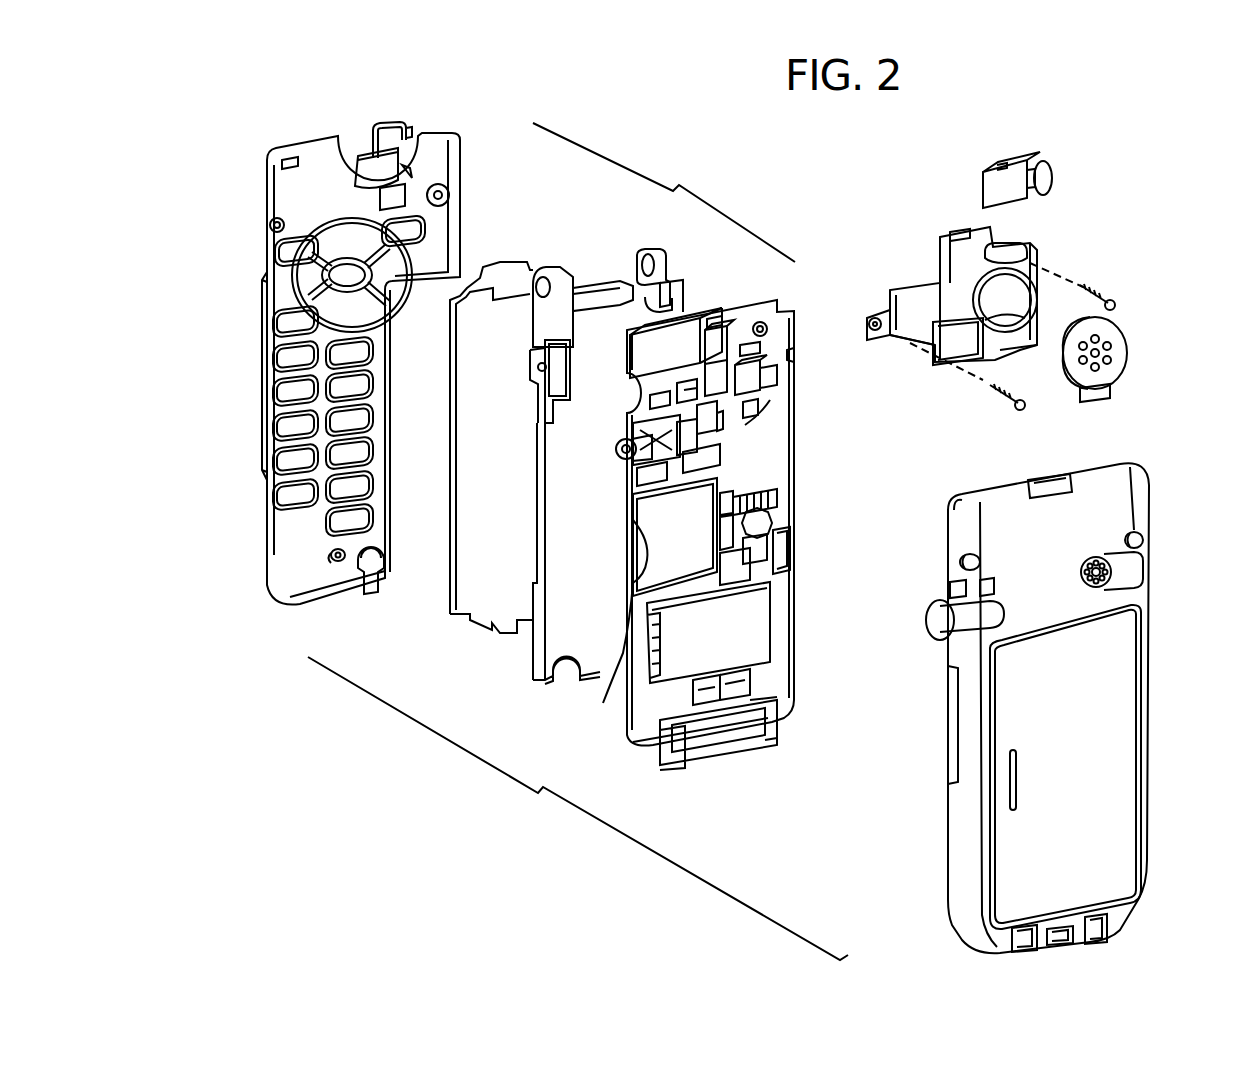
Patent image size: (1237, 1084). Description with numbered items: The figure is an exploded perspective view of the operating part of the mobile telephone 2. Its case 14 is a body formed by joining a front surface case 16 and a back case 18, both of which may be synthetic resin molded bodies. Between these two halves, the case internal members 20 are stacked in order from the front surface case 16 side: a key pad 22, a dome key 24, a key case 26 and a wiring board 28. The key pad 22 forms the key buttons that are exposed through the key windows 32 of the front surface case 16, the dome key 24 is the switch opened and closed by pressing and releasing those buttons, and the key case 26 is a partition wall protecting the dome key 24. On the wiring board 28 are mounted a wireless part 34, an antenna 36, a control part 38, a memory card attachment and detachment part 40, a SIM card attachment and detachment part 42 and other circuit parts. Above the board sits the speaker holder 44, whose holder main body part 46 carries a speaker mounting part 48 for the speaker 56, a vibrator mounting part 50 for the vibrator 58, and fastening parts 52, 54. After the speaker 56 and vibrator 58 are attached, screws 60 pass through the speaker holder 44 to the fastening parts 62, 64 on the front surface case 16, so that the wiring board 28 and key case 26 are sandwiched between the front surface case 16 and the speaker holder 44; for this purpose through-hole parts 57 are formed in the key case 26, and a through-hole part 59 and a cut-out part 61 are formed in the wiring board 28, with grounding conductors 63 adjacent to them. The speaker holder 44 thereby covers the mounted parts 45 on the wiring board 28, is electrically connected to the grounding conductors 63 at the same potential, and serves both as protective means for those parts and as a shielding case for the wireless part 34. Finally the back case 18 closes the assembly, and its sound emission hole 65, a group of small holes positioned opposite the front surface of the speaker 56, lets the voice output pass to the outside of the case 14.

The mobile telephone 2 is at (329, 766).
The case 14 is at (578, 808).
The front surface case 16 is at (305, 612).
The back case 18 is at (1012, 708).
The case internal members 20 is at (664, 192).
The key pad 22 is at (520, 262).
The dome key 24 is at (580, 286).
The key case 26 is at (660, 246).
The wiring board 28 is at (700, 486).
The key windows 32 is at (275, 512).
The wireless part 34 is at (730, 403).
The antenna 36 is at (682, 328).
The control part 38 is at (742, 498).
The memory card attachment and detachment part 40 is at (622, 418).
The SIM card attachment and detachment part 42 is at (757, 628).
The speaker holder 44 is at (960, 230).
The mounted parts 45 is at (762, 378).
The holder main body part 46 is at (960, 360).
The speaker mounting part 48 is at (1017, 290).
The vibrator mounting part 50 is at (1007, 240).
The fastening part 52 is at (1027, 257).
The fastening part 54 is at (870, 332).
The speaker 56 is at (1127, 380).
The through-hole parts 57 is at (537, 372).
The vibrator 58 is at (1005, 163).
The through-hole part 59 is at (767, 329).
The screws 60 is at (1116, 306).
The cut-out part 61 is at (536, 674).
The fastening part 62 is at (449, 195).
The grounding conductors 63 is at (790, 355).
The fastening part 64 is at (270, 224).
The sound emission hole 65 is at (1144, 576).